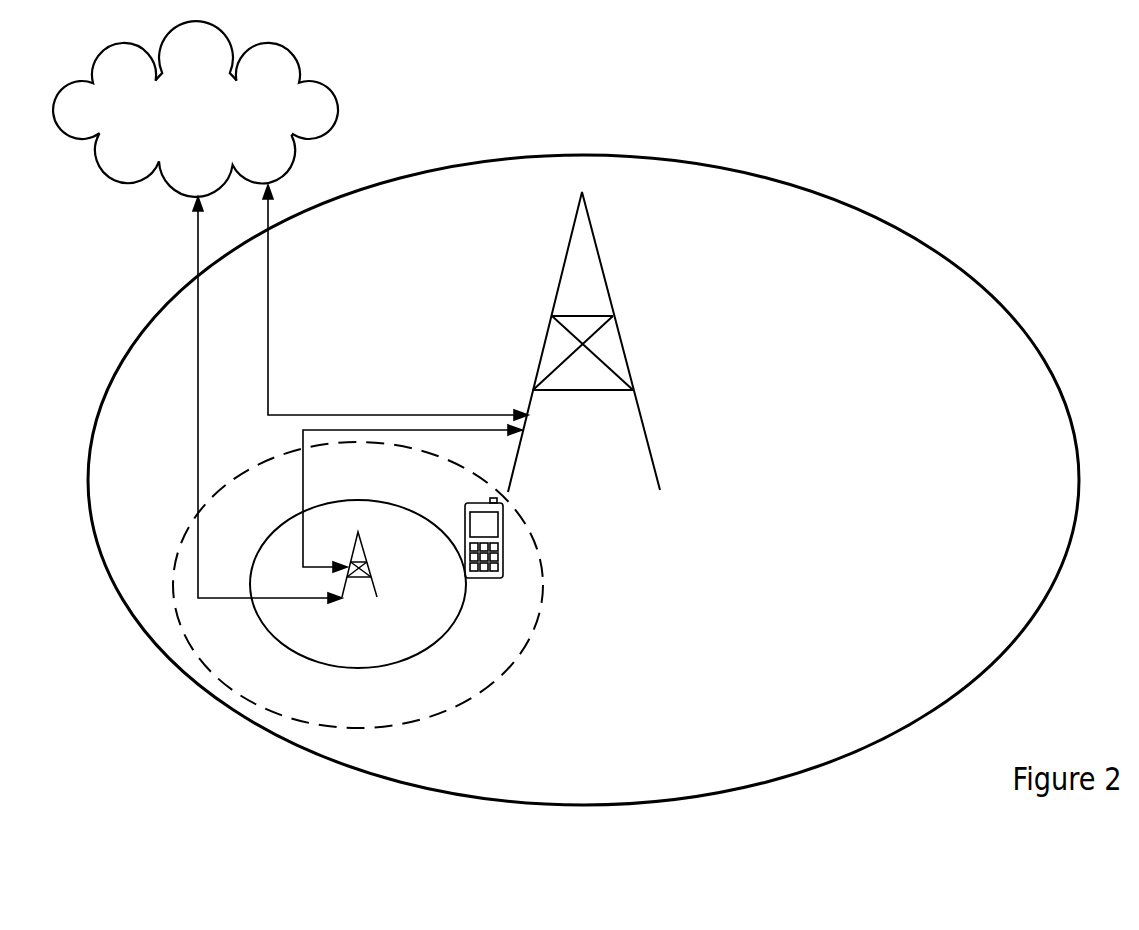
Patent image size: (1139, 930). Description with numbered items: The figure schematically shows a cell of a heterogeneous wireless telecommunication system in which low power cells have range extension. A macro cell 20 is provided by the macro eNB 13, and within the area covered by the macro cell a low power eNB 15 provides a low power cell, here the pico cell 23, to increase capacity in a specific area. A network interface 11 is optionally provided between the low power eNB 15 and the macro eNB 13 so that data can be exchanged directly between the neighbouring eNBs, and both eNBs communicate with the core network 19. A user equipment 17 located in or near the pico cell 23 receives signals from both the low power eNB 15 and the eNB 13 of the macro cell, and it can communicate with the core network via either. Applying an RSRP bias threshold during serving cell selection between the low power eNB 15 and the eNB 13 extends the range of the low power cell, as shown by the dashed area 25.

The network interface 11 is at (300, 508).
The macro eNB 13 is at (643, 421).
The low power eNB 15 is at (373, 577).
The user equipment 17 is at (490, 578).
The core network 19 is at (293, 56).
The macro cell 20 is at (927, 241).
The pico cell 23 is at (262, 550).
The dashed area 25 is at (515, 657).